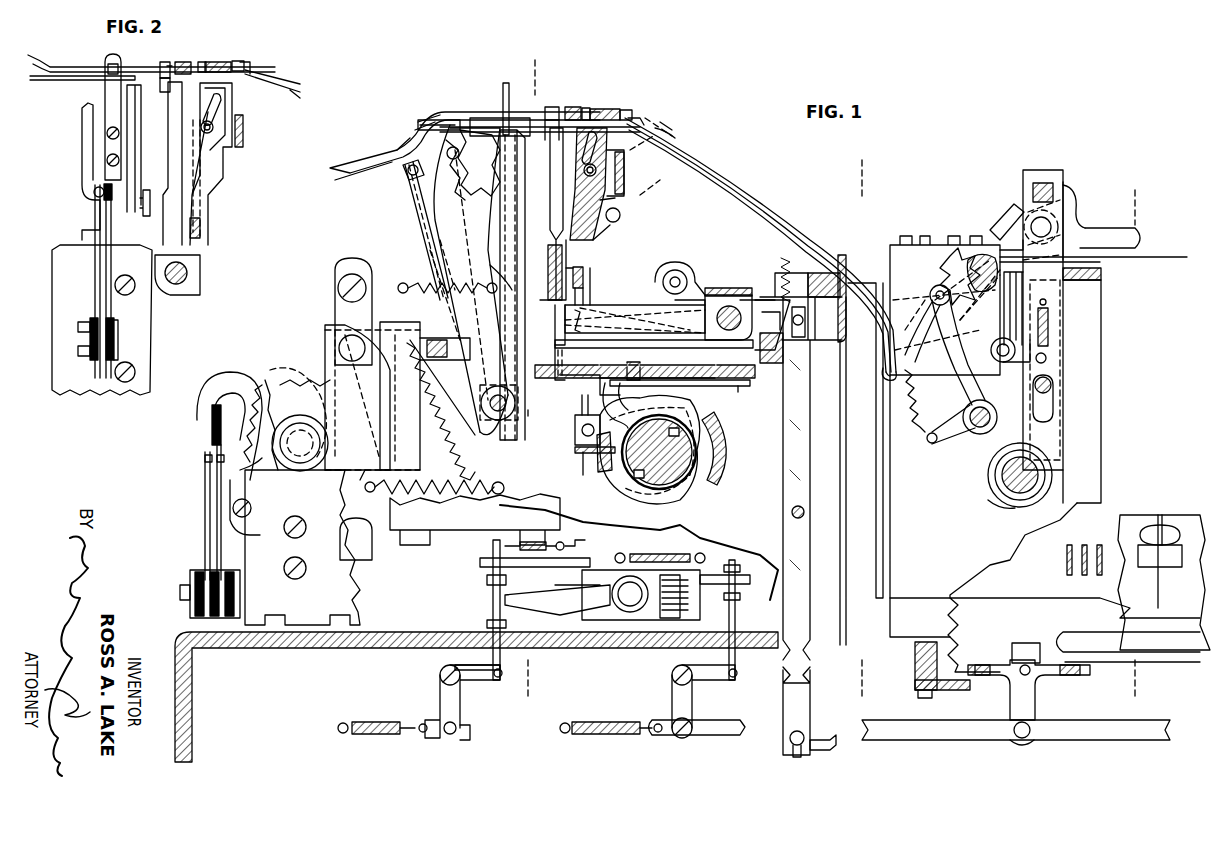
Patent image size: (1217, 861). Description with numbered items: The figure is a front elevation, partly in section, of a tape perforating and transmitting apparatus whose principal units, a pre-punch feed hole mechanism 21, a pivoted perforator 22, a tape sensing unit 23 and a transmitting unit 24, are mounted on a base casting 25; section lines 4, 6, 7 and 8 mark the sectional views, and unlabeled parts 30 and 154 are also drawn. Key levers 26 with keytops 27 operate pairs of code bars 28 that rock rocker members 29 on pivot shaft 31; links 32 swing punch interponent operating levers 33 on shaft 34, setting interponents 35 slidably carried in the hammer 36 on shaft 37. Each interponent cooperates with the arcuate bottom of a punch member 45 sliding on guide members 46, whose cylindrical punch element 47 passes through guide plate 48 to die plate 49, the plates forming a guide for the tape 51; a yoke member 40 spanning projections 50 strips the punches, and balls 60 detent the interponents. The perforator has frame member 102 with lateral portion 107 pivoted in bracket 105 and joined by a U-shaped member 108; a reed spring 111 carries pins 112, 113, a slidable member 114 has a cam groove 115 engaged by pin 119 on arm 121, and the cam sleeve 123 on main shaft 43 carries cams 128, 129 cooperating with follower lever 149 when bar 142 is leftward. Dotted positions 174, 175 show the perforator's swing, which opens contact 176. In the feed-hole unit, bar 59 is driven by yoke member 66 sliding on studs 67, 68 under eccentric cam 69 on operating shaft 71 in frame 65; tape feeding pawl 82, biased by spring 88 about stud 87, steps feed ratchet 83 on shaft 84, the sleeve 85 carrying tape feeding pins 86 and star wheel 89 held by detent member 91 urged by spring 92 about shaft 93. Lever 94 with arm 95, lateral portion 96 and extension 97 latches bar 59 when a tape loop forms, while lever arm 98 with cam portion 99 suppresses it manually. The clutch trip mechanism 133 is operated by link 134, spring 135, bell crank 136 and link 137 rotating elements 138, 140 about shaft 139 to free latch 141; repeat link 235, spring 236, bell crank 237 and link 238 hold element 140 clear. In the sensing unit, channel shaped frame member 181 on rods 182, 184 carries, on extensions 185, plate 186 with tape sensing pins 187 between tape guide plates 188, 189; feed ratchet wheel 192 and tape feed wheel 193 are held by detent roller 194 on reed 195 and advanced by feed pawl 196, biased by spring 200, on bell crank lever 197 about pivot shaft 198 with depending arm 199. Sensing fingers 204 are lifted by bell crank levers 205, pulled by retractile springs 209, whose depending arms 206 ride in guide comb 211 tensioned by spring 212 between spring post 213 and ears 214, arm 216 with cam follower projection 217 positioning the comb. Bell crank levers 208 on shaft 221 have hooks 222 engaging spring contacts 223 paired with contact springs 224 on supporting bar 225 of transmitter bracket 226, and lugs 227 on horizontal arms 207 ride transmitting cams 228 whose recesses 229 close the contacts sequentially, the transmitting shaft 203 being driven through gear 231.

In FIG. 1, the pre-punch feed hole mechanism 21 is at (1112, 228).
In FIG. 1, the pivoted perforator 22 is at (660, 106).
In FIG. 1, the tape sensing unit 23 is at (437, 96).
In FIG. 1, the transmitting unit 24 is at (222, 365).
In FIG. 1, the base casting 25 is at (205, 706).
In FIG. 1, the key levers 26 is at (1100, 545).
In FIG. 1, the keytops 27 is at (1165, 530).
In FIG. 1, the code bars 28 is at (1050, 608).
In FIG. 1, the rocker member 29 is at (1035, 705).
In FIG. 1, the plate 30 is at (690, 388).
In FIG. 1, the pivot shaft 31 is at (1025, 665).
In FIG. 1, the link member 32 is at (1062, 745).
In FIG. 1, the punch interponent operating lever 33 is at (783, 700).
In FIG. 1, the shaft 34 is at (790, 512).
In FIG. 1, the interponent member 35 is at (765, 365).
In FIG. 1, the hammer 36 is at (752, 392).
In FIG. 1, the shaft 37 is at (730, 305).
In FIG. 1, the yoke member 40 is at (570, 458).
In FIG. 1, the main shaft 43 is at (700, 450).
In FIG. 2, the punch member 45 is at (172, 140).
In FIG. 1, the punch member 45 is at (500, 230).
In FIG. 1, the guide members 46 is at (586, 275).
In FIG. 2, the cylindrical punch element 47 is at (168, 88).
In FIG. 1, the cylindrical punch element 47 is at (548, 118).
In FIG. 2, the guide plate 48 is at (163, 72).
In FIG. 1, the guide plate 48 is at (552, 110).
In FIG. 2, the die plate 49 is at (183, 62).
In FIG. 1, the die plate 49 is at (574, 108).
In FIG. 1, the projections 50 is at (555, 305).
In FIG. 2, the tape 51 is at (278, 88).
In FIG. 1, the tape 51 is at (680, 142).
In FIG. 1, the bar 59 is at (1045, 182).
In FIG. 1, the ball 60 is at (640, 362).
In FIG. 1, the frame 65 is at (1108, 432).
In FIG. 1, the yoke member 66 is at (1063, 350).
In FIG. 1, the stud 67 is at (1105, 274).
In FIG. 1, the stud 68 is at (1055, 385).
In FIG. 1, the eccentric cam 69 is at (1055, 470).
In FIG. 1, the operating shaft 71 is at (990, 482).
In FIG. 1, the tape feeding pawl 82 is at (1012, 290).
In FIG. 1, the feed ratchet 83 is at (978, 300).
In FIG. 1, the shaft 84 is at (948, 266).
In FIG. 1, the sleeve 85 is at (982, 250).
In FIG. 1, the tape feeding pins 86 is at (1010, 240).
In FIG. 1, the stud 87 is at (992, 348).
In FIG. 1, the spring 88 is at (1052, 323).
In FIG. 1, the star wheel 89 is at (958, 255).
In FIG. 1, the detent member 91 is at (968, 375).
In FIG. 1, the spring 92 is at (920, 400).
In FIG. 1, the shaft 93 is at (970, 440).
In FIG. 1, the lever 94 is at (1015, 205).
In FIG. 1, the arm 95 is at (885, 285).
In FIG. 1, the lateral portion 96 is at (912, 360).
In FIG. 1, the extension 97 is at (1068, 205).
In FIG. 1, the lever arm 98 is at (1142, 240).
In FIG. 1, the cam portion 99 is at (1080, 222).
In FIG. 1, the frame member 102 is at (592, 290).
In FIG. 1, the bracket 105 is at (510, 282).
In FIG. 1, the lateral portion 107 is at (556, 338).
In FIG. 2, the U-shaped member 108 is at (246, 130).
In FIG. 1, the U-shaped member 108 is at (628, 168).
In FIG. 2, the reed spring 111 is at (228, 64).
In FIG. 1, the reed spring 111 is at (606, 108).
In FIG. 2, the pin 112 is at (203, 64).
In FIG. 1, the pin 112 is at (590, 106).
In FIG. 2, the pin 113 is at (248, 68).
In FIG. 1, the pin 113 is at (626, 114).
In FIG. 2, the slidably movable member 114 is at (228, 108).
In FIG. 1, the slidably movable member 114 is at (602, 145).
In FIG. 2, the cam groove 115 is at (222, 100).
In FIG. 1, the cam groove 115 is at (597, 136).
In FIG. 2, the pin 119 is at (214, 130).
In FIG. 1, the pin 119 is at (598, 172).
In FIG. 2, the arm 121 is at (213, 180).
In FIG. 1, the arm 121 is at (612, 222).
In FIG. 1, the cam sleeve 123 is at (680, 488).
In FIG. 1, the cam 128 is at (650, 510).
In FIG. 1, the cam 129 is at (712, 472).
In FIG. 1, the clutch trip mechanism 133 is at (595, 622).
In FIG. 1, the link 134 is at (730, 735).
In FIG. 1, the spring 135 is at (615, 738).
In FIG. 1, the bell crank 136 is at (678, 698).
In FIG. 1, the link 137 is at (740, 608).
In FIG. 1, the element 138 is at (538, 600).
In FIG. 1, the shaft 139 is at (640, 580).
In FIG. 1, the element 140 is at (492, 598).
In FIG. 1, the latch 141 is at (575, 545).
In FIG. 1, the bar 142 is at (568, 452).
In FIG. 1, the follower lever 149 is at (618, 400).
In FIG. 2, the wire 154 is at (262, 70).
In FIG. 1, the wire 154 is at (640, 114).
In FIG. 1, the dotted position 174 is at (512, 185).
In FIG. 1, the dotted position 175 is at (650, 182).
In FIG. 2, the contact 176 is at (148, 190).
In FIG. 1, the contact 176 is at (567, 245).
In FIG. 1, the channel shaped frame member 181 is at (428, 236).
In FIG. 1, the rod 182 is at (498, 418).
In FIG. 1, the rod 184 is at (445, 150).
In FIG. 1, the extensions 185 is at (425, 120).
In FIG. 1, the plate 186 is at (503, 95).
In FIG. 1, the tape sensing pins 187 is at (490, 182).
In FIG. 1, the tape guide plate 188 is at (498, 118).
In FIG. 1, the tape guide plate 189 is at (428, 118).
In FIG. 1, the feed ratchet wheel 192 is at (440, 96).
In FIG. 1, the tape feed wheel 193 is at (370, 172).
In FIG. 1, the detent roller 194 is at (390, 149).
In FIG. 1, the reed 195 is at (410, 178).
In FIG. 1, the feed pawl 196 is at (440, 228).
In FIG. 1, the bell crank lever 197 is at (405, 325).
In FIG. 1, the pivot shaft 198 is at (340, 335).
In FIG. 1, the depending arm 199 is at (400, 445).
In FIG. 1, the spring 200 is at (440, 245).
In FIG. 1, the transmitting shaft 203 is at (272, 372).
In FIG. 1, the sensing fingers 204 is at (462, 255).
In FIG. 1, the bell crank levers 205 is at (432, 286).
In FIG. 1, the depending arm 206 is at (370, 495).
In FIG. 1, the horizontal arm 207 is at (356, 532).
In FIG. 1, the bell crank lever 208 is at (235, 466).
In FIG. 1, the retractile spring 209 is at (430, 498).
In FIG. 1, the guide comb 211 is at (400, 484).
In FIG. 1, the spring 212 is at (470, 432).
In FIG. 1, the spring post 213 is at (505, 488).
In FIG. 1, the ears 214 is at (390, 280).
In FIG. 1, the arm 216 is at (458, 417).
In FIG. 1, the cam follower projection 217 is at (310, 418).
In FIG. 1, the shaft 221 is at (232, 512).
In FIG. 1, the hook 222 is at (200, 418).
In FIG. 1, the spring contact 223 is at (208, 450).
In FIG. 1, the contact spring 224 is at (205, 496).
In FIG. 1, the supporting bar 225 is at (232, 575).
In FIG. 1, the transmitter bracket 226 is at (345, 598).
In FIG. 1, the lug 227 is at (287, 562).
In FIG. 1, the transmitting cam 228 is at (285, 390).
In FIG. 1, the recess 229 is at (300, 538).
In FIG. 1, the gear 231 is at (300, 380).
In FIG. 1, the link 235 is at (470, 732).
In FIG. 1, the spring 236 is at (378, 718).
In FIG. 1, the bell crank 237 is at (440, 691).
In FIG. 1, the link 238 is at (480, 655).
In FIG. 1, the section line 4 is at (738, 392).
In FIG. 1, the section line 6 is at (845, 163).
In FIG. 1, the section line 7 is at (1118, 190).
In FIG. 1, the section line 8 is at (520, 66).